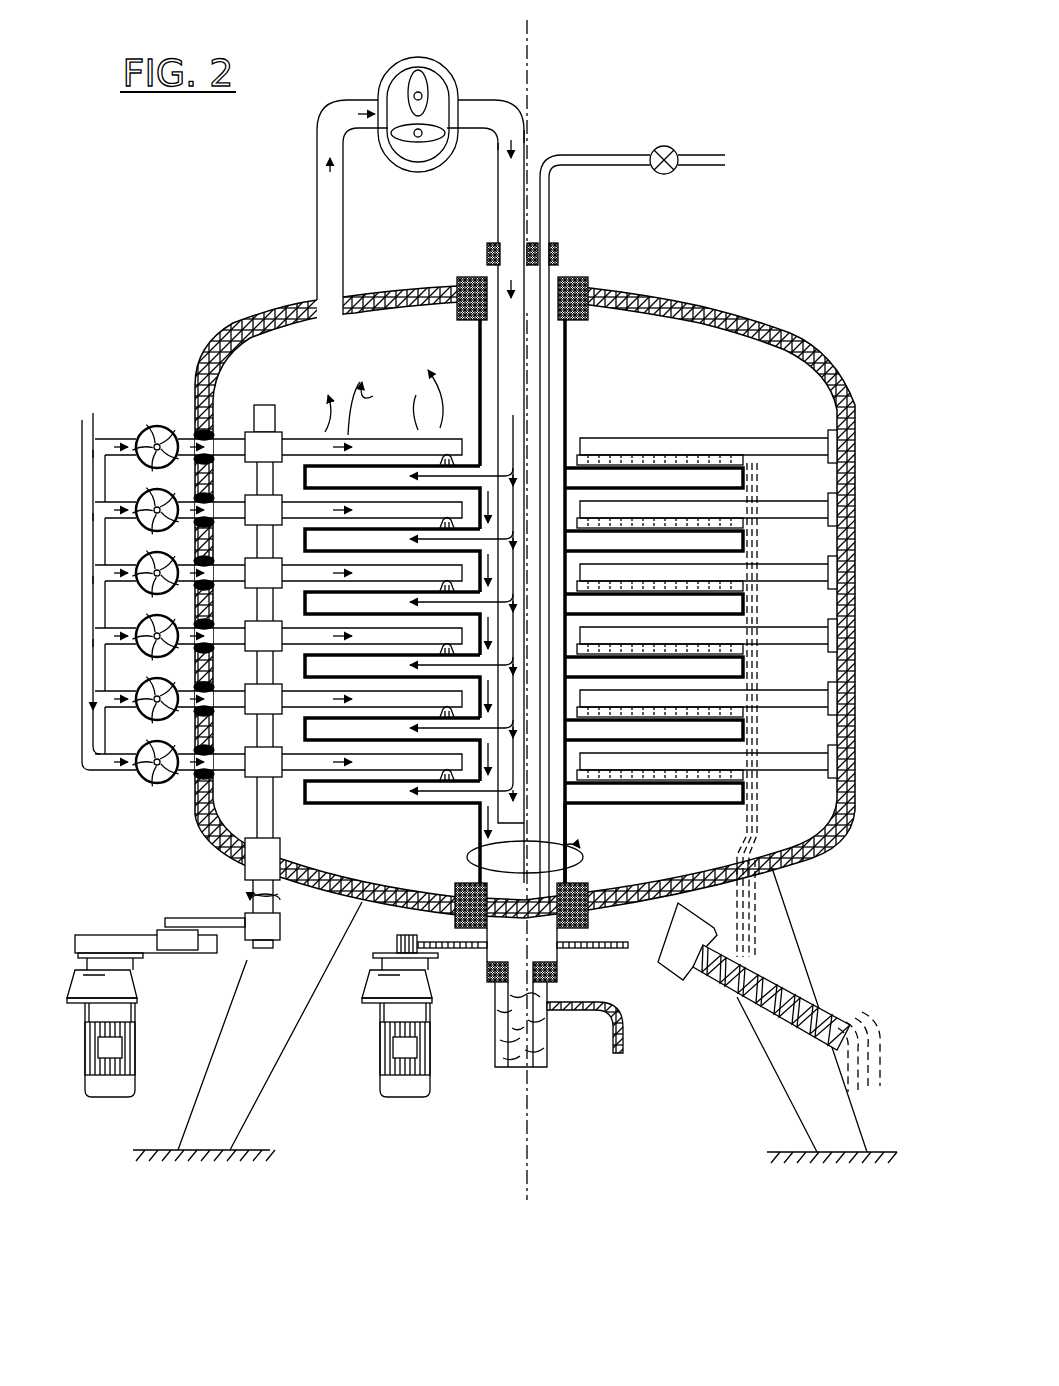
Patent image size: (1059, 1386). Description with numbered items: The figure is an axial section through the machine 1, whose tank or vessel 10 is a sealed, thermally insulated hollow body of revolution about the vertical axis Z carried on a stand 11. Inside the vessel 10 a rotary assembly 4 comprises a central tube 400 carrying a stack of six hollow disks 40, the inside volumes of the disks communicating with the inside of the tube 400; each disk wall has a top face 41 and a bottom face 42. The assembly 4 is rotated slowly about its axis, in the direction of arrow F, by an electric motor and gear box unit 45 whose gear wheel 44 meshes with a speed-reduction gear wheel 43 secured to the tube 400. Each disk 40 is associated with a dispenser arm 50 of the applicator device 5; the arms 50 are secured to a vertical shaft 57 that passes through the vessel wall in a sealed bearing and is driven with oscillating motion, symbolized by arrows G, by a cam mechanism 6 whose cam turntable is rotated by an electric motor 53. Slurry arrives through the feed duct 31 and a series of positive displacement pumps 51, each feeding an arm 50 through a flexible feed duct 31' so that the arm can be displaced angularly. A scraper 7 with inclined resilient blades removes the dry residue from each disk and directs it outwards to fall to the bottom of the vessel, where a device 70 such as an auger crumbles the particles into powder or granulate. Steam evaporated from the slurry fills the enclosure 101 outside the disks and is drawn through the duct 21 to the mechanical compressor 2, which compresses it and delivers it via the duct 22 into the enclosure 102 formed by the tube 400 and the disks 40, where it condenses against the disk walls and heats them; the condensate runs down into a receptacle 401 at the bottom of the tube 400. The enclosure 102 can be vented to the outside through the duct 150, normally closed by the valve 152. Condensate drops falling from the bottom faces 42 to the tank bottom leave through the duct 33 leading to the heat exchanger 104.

The machine 1 is at (540, 574).
The mechanical compressor 2 is at (464, 70).
The assembly of central tube and hollow disks 4 is at (570, 385).
The applicator device 5 is at (256, 380).
The cam mechanism 6 is at (148, 921).
The scraper 7 is at (709, 434).
The tank or vessel 10 is at (838, 372).
The stand 11 is at (284, 1049).
The steam duct 21 is at (317, 235).
The compressed steam duct 22 is at (497, 360).
The slurry feed duct 31 is at (66, 591).
The slurry feed ducts 31' is at (278, 541).
The condensate duct 33 is at (626, 1035).
The hollow disk 40 is at (319, 458).
The top face of the wall 41 is at (414, 437).
The bottom face of the wall 42 is at (393, 436).
The gear wheel 43 is at (603, 950).
The gear wheel 44 is at (397, 947).
The electric motor and gear box unit 45 is at (379, 1076).
The dispenser arm 50 is at (349, 435).
The positive displacement pump 51 is at (174, 492).
The electric motor 53 is at (137, 1045).
The vertical shaft 57 is at (258, 806).
The auger device 70 is at (787, 988).
The enclosure 101 is at (636, 412).
The enclosure 102 is at (648, 794).
The heat exchanger 104 is at (497, 1070).
The vent duct 150 is at (551, 218).
The valve 152 is at (679, 141).
The central tube 400 is at (478, 830).
The receptacle 401 is at (577, 1062).
The arrow F is at (533, 850).
The arrows G is at (276, 903).
The vertical axis ZZ' Z is at (545, 627).